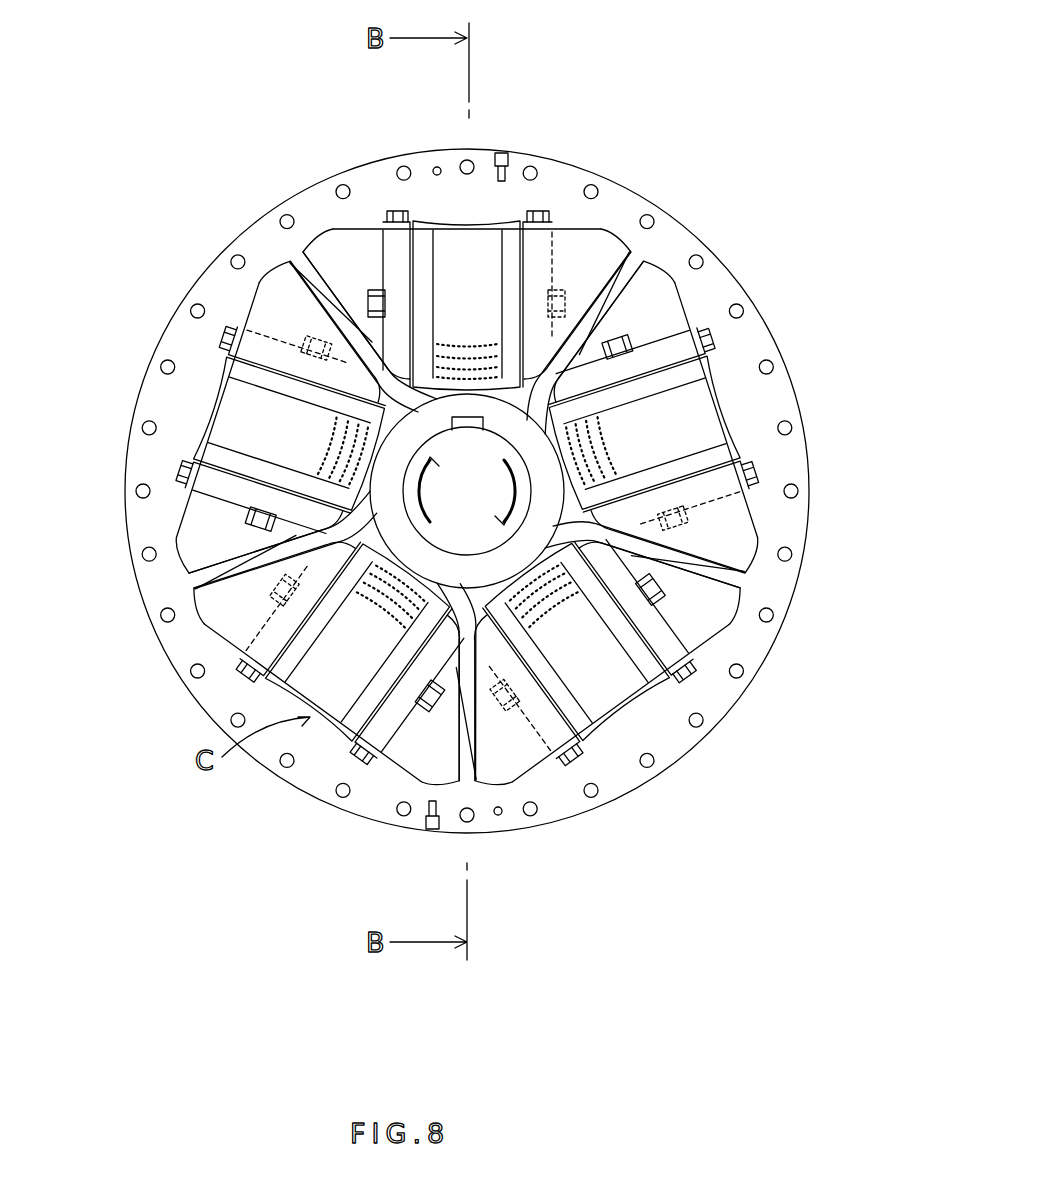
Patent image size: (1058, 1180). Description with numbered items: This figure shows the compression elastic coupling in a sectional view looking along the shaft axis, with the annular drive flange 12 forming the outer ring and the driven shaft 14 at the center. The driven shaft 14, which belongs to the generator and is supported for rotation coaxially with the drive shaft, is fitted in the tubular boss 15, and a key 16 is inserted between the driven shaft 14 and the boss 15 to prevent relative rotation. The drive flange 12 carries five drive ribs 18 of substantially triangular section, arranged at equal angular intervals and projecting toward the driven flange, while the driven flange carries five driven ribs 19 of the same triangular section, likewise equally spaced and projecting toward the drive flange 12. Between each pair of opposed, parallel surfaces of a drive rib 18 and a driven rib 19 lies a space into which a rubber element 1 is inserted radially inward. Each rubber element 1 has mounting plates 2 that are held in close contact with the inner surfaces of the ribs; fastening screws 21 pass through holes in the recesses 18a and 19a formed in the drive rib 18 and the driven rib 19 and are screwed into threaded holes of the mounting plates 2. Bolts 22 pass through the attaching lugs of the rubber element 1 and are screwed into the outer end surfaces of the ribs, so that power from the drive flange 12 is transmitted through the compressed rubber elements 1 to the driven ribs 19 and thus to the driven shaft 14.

The rubber element 1 is at (458, 498).
The mounting plate 2 is at (287, 637).
The drive flange 12 is at (668, 161).
The driven shaft 14 is at (450, 515).
The boss 15 is at (535, 530).
The key 16 is at (485, 425).
The drive rib 18 is at (232, 485).
The recess 18a is at (197, 517).
The driven rib 19 is at (258, 345).
The recess 19a is at (290, 300).
The fastening screw 21 is at (662, 592).
The bolt 22 is at (390, 210).